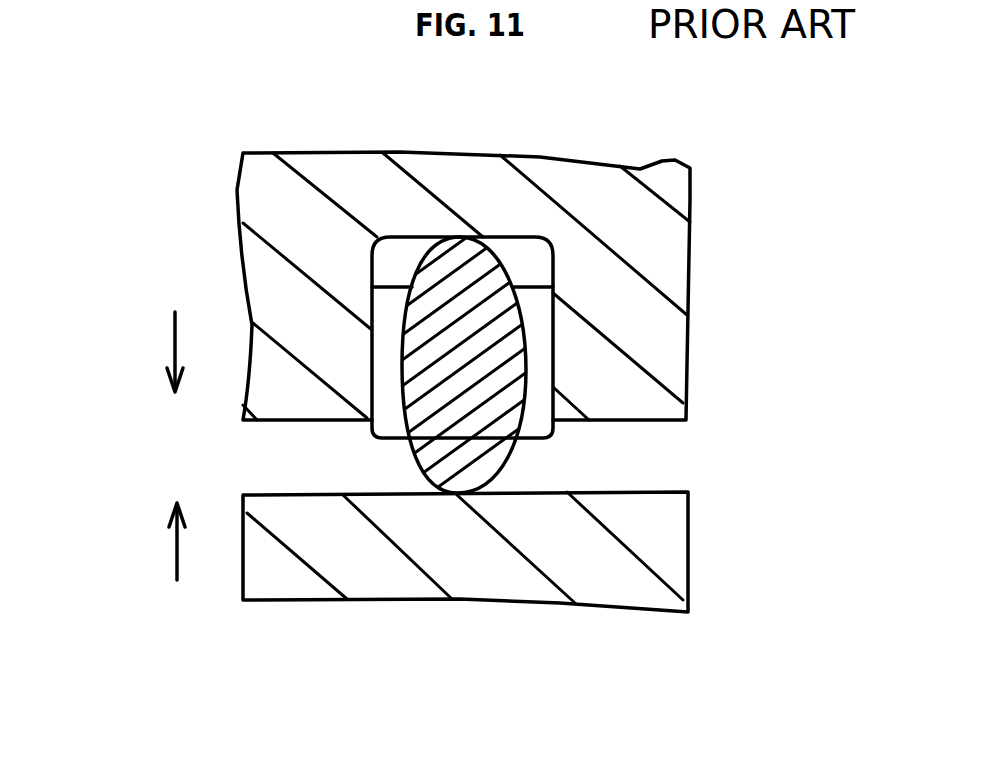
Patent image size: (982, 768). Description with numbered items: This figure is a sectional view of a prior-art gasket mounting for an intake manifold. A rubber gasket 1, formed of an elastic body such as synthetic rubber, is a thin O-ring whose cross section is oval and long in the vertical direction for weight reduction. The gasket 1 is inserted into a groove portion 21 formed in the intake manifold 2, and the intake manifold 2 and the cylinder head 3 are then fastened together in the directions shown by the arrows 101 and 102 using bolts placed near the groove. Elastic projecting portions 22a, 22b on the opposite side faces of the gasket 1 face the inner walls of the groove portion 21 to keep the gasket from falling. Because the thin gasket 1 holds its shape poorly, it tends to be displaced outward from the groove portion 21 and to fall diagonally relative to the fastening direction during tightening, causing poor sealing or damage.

The rubber gasket 1 is at (510, 457).
The intake manifold 2 is at (430, 177).
The cylinder head 3 is at (415, 583).
The groove portion 21 is at (553, 272).
The elastic projecting portion 22a is at (388, 318).
The elastic projecting portion 22b is at (543, 352).
The arrow 101 is at (174, 340).
The arrow 102 is at (175, 548).